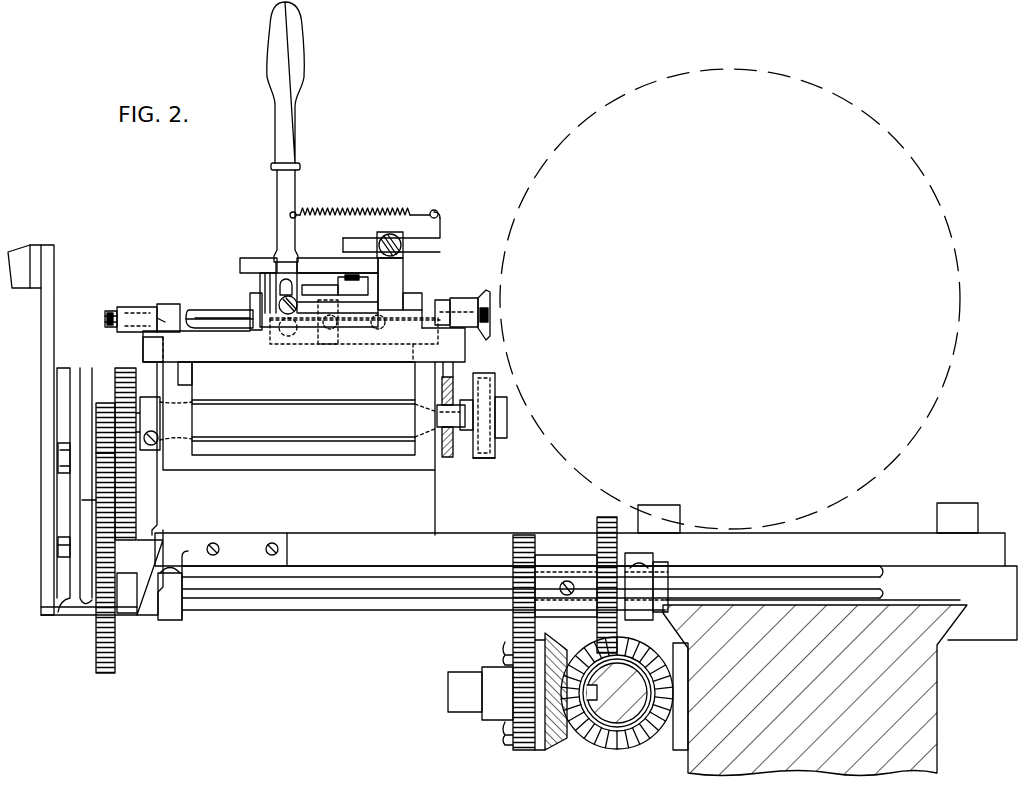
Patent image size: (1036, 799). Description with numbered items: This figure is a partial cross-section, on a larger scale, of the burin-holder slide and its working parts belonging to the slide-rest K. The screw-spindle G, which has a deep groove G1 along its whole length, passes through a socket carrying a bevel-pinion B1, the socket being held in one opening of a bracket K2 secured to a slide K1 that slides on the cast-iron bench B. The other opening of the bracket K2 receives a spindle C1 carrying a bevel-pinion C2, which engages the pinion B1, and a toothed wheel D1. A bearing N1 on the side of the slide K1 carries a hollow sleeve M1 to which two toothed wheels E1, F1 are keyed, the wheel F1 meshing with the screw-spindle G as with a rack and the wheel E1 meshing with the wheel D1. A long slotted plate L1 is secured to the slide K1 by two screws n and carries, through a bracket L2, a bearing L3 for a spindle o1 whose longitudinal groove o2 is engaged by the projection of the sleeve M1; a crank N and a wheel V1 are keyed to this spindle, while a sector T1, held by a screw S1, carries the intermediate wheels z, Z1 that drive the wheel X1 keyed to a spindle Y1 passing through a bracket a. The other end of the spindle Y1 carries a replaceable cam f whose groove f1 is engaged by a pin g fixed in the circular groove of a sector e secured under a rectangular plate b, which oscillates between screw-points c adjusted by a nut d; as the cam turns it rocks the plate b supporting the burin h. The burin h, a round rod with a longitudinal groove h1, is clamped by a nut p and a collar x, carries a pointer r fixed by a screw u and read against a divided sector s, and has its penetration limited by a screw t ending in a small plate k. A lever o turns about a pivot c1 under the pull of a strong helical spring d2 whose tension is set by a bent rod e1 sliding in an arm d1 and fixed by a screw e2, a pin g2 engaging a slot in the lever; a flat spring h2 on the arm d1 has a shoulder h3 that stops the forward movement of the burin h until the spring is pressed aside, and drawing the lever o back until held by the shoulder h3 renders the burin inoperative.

The lever o is at (282, 103).
The slide-rest K is at (659, 299).
The helical spring d2 is at (318, 214).
The bent rod e1 is at (441, 242).
The screw e2 is at (379, 242).
The flat spring h2 is at (255, 262).
The shoulder h3 is at (300, 265).
The nut p is at (350, 290).
The arm d1 is at (404, 308).
The pin g2 is at (319, 300).
The divided sector s is at (262, 288).
The pointer r is at (258, 300).
The screw u is at (280, 312).
The pivot c1 is at (288, 340).
The screw t is at (355, 326).
The collar x is at (352, 333).
The rectangular plate b is at (304, 345).
The nut d is at (120, 308).
The screw-points c is at (107, 312).
The bracket a is at (162, 306).
The burin h is at (190, 310).
The longitudinal groove h1 is at (215, 316).
The small plate k is at (490, 296).
The spindle Y1 is at (288, 448).
The sector e is at (448, 458).
The pin g is at (462, 398).
The cam f is at (484, 378).
The cam groove f1 is at (476, 458).
The crank N is at (44, 515).
The sector T1 is at (75, 489).
The screw S1 is at (65, 536).
The intermediate wheel z is at (89, 499).
The wheel X1 is at (116, 378).
The intermediate wheel Z1 is at (116, 396).
The wheel V1 is at (98, 655).
The plate L1 is at (580, 548).
The bracket L2 is at (242, 548).
The bearing L3 is at (177, 612).
The spindle o1 is at (287, 598).
The longitudinal groove o2 is at (400, 589).
The screws n is at (665, 517).
The slide K1 is at (841, 603).
The cast-iron bench B is at (815, 690).
The toothed wheel E1 is at (520, 535).
The toothed wheel D1 is at (527, 752).
The toothed wheel F1 is at (597, 521).
The hollow sleeve M1 is at (566, 586).
The bearing N1 is at (640, 562).
The spindle C1 is at (455, 700).
The bracket K2 is at (492, 715).
The bevel-pinion C2 is at (555, 752).
The screw-spindle G is at (610, 752).
The groove G1 is at (590, 740).
The bevel-pinion B1 is at (646, 748).